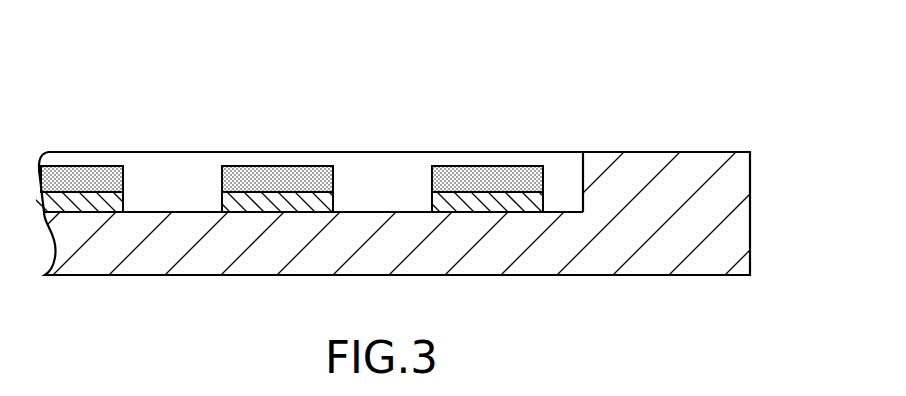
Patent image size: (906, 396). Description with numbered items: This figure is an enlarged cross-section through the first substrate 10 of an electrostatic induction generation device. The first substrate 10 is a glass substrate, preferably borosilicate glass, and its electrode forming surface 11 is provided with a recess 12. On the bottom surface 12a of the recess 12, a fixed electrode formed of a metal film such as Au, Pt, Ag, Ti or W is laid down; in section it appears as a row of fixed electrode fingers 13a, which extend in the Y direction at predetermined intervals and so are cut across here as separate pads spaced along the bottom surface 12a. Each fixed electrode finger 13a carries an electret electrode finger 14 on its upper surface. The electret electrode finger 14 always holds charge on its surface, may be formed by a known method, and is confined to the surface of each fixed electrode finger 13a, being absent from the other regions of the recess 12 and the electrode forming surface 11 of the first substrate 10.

The first substrate 10 is at (740, 215).
The electrode forming surface 11 is at (650, 152).
The recess 12 is at (581, 174).
The bottom surface of the recess 12a is at (392, 210).
The fixed electrode fingers 13a is at (227, 202).
The electret electrode finger 14 is at (327, 178).